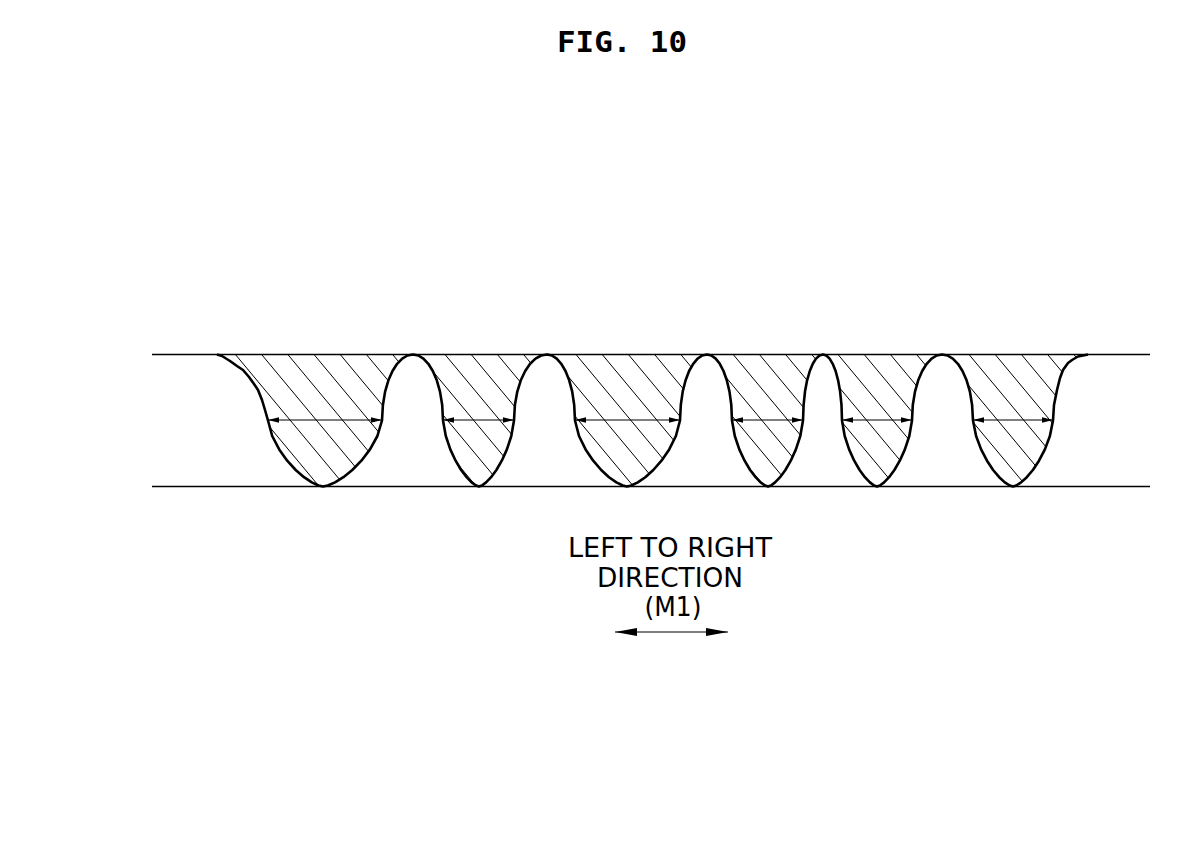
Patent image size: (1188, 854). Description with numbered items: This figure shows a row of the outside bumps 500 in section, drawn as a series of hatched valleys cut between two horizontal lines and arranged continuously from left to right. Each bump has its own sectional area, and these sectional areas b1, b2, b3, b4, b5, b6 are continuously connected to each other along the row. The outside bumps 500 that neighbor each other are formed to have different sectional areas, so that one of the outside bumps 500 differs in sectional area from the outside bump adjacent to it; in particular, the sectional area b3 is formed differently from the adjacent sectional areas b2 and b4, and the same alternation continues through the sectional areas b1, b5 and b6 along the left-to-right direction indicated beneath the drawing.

The outside bumps 500 is at (887, 368).
The sectional area b1 is at (325, 405).
The sectional area b2 is at (478, 405).
The sectional area b3 is at (627, 405).
The sectional area b4 is at (767, 405).
The sectional area b5 is at (877, 405).
The sectional area b6 is at (1013, 405).